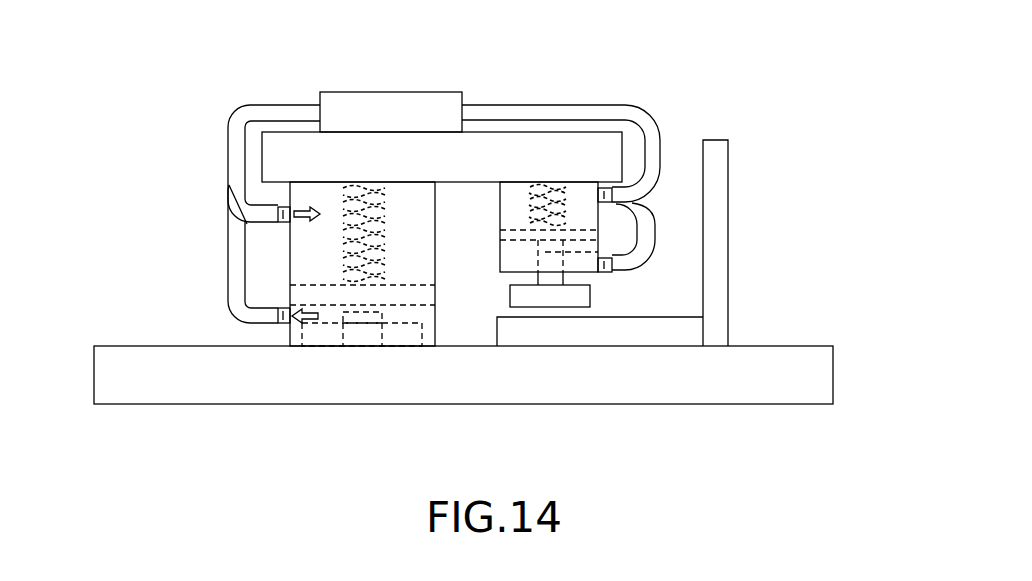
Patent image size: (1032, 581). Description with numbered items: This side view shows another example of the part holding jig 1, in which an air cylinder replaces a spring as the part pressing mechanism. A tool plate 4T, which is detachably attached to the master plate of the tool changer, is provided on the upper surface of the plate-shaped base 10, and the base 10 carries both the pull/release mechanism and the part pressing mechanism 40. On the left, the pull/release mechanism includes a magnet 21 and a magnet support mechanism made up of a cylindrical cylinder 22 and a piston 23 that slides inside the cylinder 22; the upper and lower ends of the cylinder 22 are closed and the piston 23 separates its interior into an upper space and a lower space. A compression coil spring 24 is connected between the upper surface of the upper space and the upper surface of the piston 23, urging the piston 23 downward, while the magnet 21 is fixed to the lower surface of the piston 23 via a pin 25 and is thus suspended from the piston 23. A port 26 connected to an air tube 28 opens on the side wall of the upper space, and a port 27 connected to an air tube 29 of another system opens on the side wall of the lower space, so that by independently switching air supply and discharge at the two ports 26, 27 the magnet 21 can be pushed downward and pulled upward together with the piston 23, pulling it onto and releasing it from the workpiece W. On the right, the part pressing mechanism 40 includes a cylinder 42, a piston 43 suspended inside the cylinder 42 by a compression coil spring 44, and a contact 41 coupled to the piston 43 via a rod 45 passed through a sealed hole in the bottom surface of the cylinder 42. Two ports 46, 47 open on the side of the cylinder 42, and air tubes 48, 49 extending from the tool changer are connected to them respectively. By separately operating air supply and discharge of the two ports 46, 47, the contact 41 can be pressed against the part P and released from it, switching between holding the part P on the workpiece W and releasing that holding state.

The part holding jig 1 is at (127, 131).
The tool plate 4T is at (320, 97).
The base 10 is at (477, 131).
The magnet 21 is at (320, 347).
The cylinder 22 is at (437, 257).
The piston 23 is at (416, 294).
The compression coil spring 24 is at (387, 207).
The pin 25 is at (378, 348).
The port 26 is at (282, 222).
The port 27 is at (283, 321).
The air tube 28 is at (232, 134).
The air tube 29 is at (234, 268).
The part pressing mechanism 40 is at (681, 141).
The contact 41 is at (576, 292).
The cylinder 42 is at (498, 262).
The piston 43 is at (517, 230).
The compression coil spring 44 is at (580, 230).
The rod 45 is at (602, 251).
The port 46 is at (606, 218).
The port 47 is at (612, 271).
The air tube 48 is at (643, 123).
The air tube 49 is at (648, 259).
The part P is at (721, 184).
The workpiece W is at (795, 346).